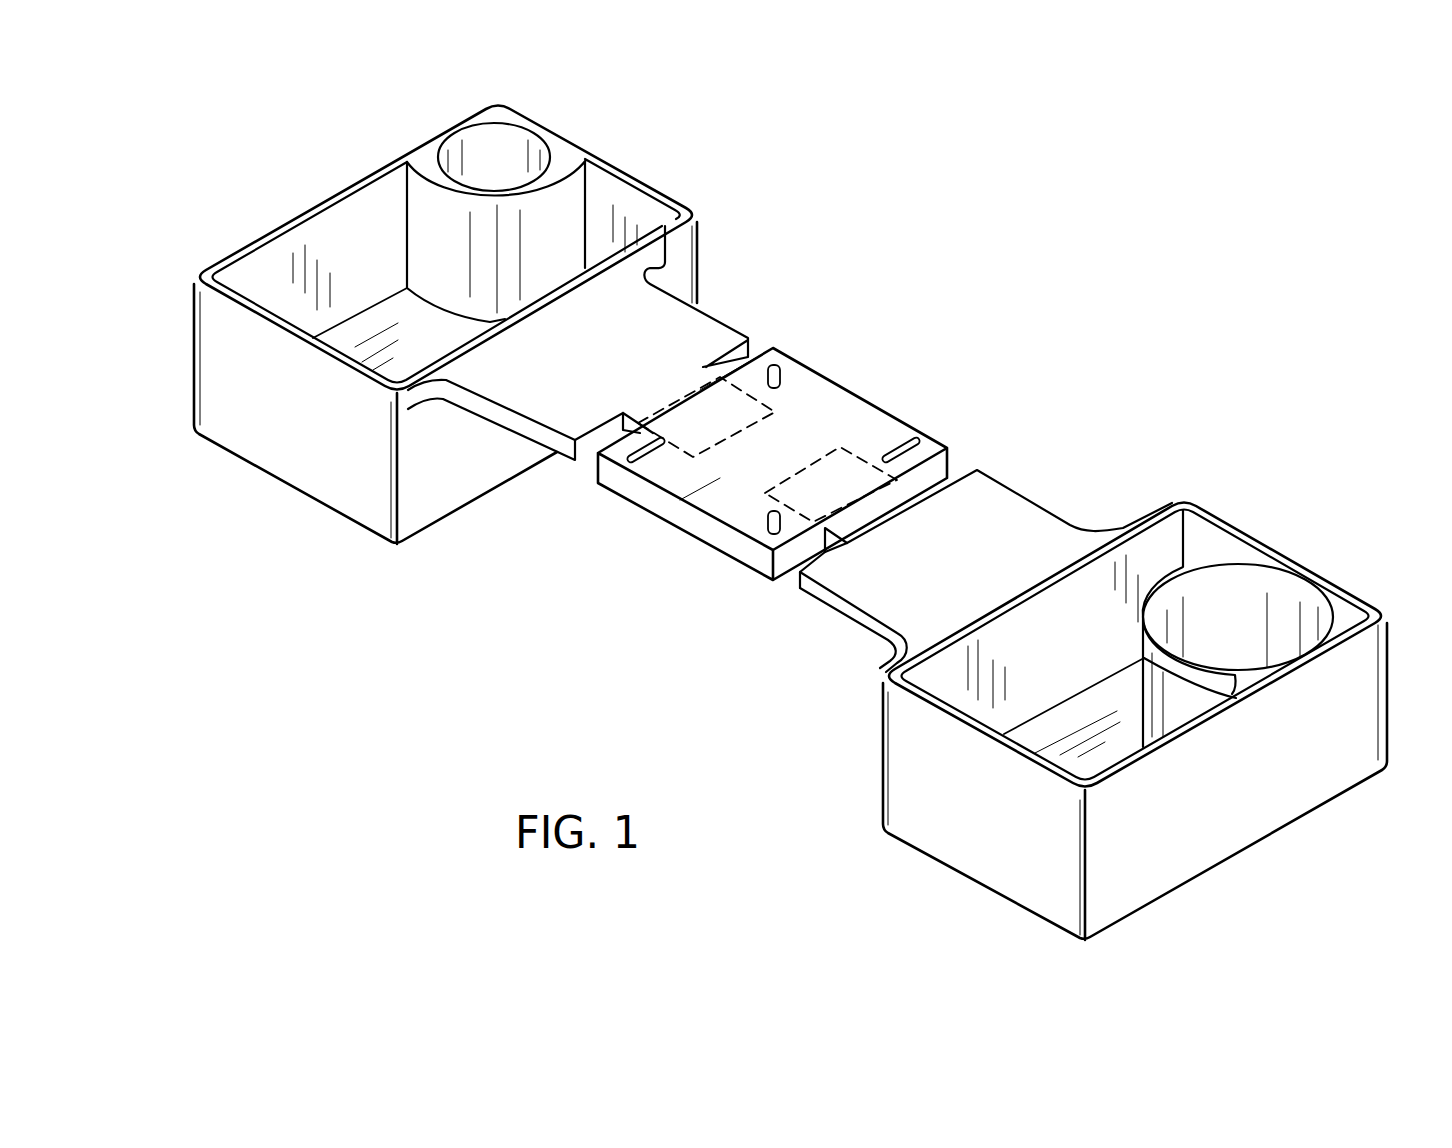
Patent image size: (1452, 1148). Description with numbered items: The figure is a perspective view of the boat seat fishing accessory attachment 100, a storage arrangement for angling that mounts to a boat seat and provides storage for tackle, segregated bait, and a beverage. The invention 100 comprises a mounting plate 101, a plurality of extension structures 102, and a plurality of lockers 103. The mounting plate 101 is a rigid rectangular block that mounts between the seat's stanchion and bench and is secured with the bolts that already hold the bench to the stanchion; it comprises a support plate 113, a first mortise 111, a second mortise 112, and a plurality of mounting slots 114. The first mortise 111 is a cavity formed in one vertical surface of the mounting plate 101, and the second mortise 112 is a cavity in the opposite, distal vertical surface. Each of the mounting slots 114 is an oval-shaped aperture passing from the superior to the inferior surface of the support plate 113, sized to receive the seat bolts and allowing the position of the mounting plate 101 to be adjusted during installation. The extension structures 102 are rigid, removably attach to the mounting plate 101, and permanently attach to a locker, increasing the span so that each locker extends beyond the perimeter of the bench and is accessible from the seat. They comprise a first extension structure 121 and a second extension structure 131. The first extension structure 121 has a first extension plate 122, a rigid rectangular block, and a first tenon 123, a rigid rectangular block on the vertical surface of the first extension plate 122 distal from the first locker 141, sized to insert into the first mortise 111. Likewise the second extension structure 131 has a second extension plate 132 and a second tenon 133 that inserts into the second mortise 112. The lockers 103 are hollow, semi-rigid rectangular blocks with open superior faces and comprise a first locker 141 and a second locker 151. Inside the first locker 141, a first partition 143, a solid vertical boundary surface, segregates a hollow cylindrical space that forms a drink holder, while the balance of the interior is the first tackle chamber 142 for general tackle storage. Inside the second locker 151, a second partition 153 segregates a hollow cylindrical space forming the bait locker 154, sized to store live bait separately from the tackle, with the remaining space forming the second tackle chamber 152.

The boat seat fishing accessory attachment 100 is at (1262, 180).
The mounting plate 101 is at (650, 515).
The plurality of extension structures 102 is at (868, 513).
The plurality of lockers 103 is at (1205, 500).
The first mortise 111 is at (777, 413).
The second mortise 112 is at (847, 447).
The support plate 113 is at (717, 487).
The plurality of mounting slots 114 is at (638, 455).
The first extension structure 121 is at (495, 415).
The first extension plate 122 is at (683, 323).
The first tenon 123 is at (680, 390).
The second extension structure 131 is at (847, 620).
The second extension plate 132 is at (1013, 527).
The second tenon 133 is at (1013, 482).
The first locker 141 is at (505, 148).
The first tackle chamber 142 is at (328, 242).
The first partition 143 is at (557, 170).
The second locker 151 is at (985, 891).
The second tackle chamber 152 is at (994, 673).
The second partition 153 is at (1227, 558).
The bait locker 154 is at (1293, 602).